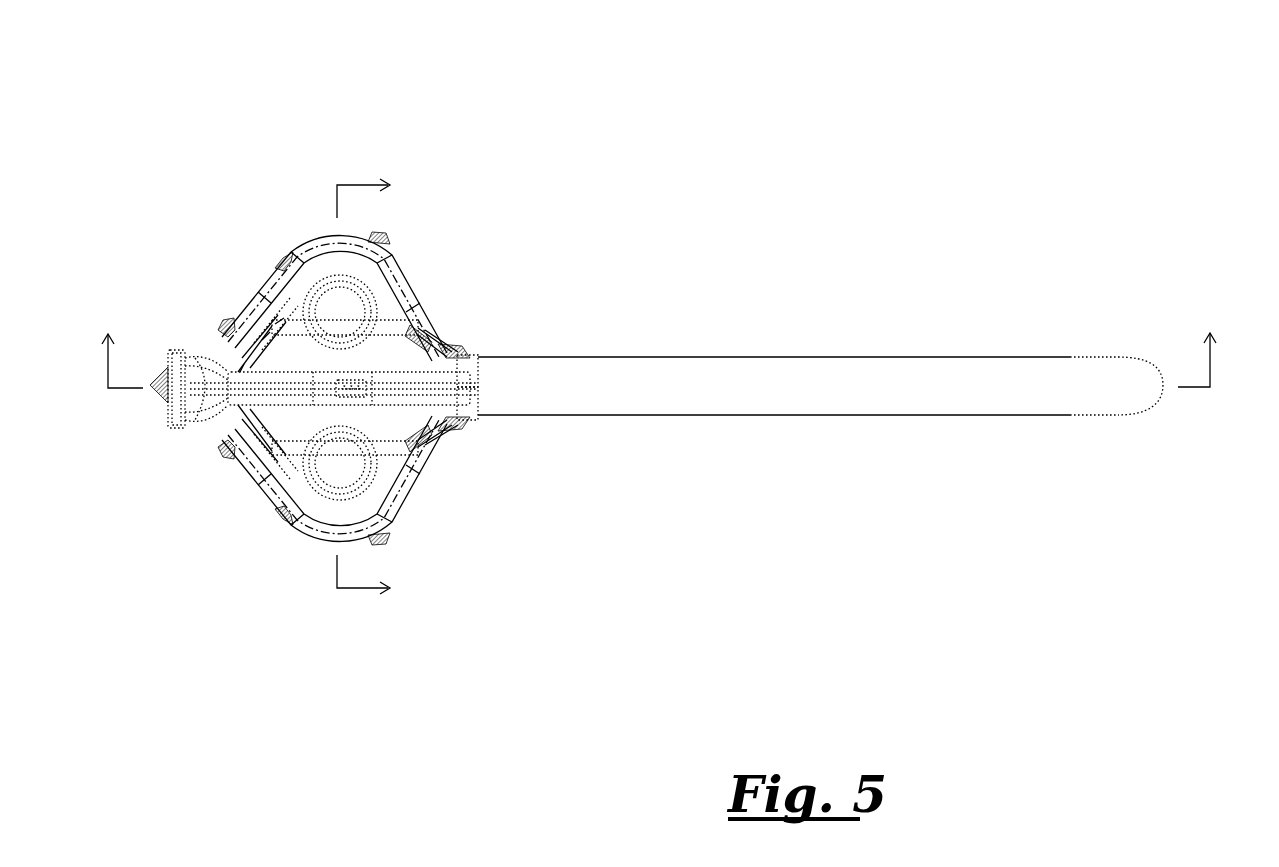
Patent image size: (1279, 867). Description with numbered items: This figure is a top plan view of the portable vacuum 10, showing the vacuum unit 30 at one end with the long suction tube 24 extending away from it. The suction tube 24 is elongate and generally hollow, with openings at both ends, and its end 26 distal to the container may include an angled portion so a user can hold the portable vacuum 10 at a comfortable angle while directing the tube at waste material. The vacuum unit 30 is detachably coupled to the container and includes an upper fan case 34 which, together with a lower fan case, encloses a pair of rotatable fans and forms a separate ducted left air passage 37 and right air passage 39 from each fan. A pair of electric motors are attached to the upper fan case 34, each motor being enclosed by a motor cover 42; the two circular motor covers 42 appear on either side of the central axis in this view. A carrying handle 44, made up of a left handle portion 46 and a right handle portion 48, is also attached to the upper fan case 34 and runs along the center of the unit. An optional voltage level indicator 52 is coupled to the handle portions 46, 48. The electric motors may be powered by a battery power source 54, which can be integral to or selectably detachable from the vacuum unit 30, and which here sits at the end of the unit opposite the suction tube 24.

The portable vacuum 10 is at (658, 323).
The suction tube 24 is at (789, 357).
The end of suction tube 26 is at (1163, 396).
The vacuum unit 30 is at (331, 388).
The upper fan case 34 is at (407, 296).
The left air passage 37 is at (213, 437).
The right air passage 39 is at (218, 353).
The motor cover 42 is at (367, 288).
The carrying handle 44 is at (311, 372).
The left handle portion 46 is at (480, 397).
The right handle portion 48 is at (480, 378).
The voltage level indicator 52 is at (357, 398).
The battery power source 54 is at (168, 413).